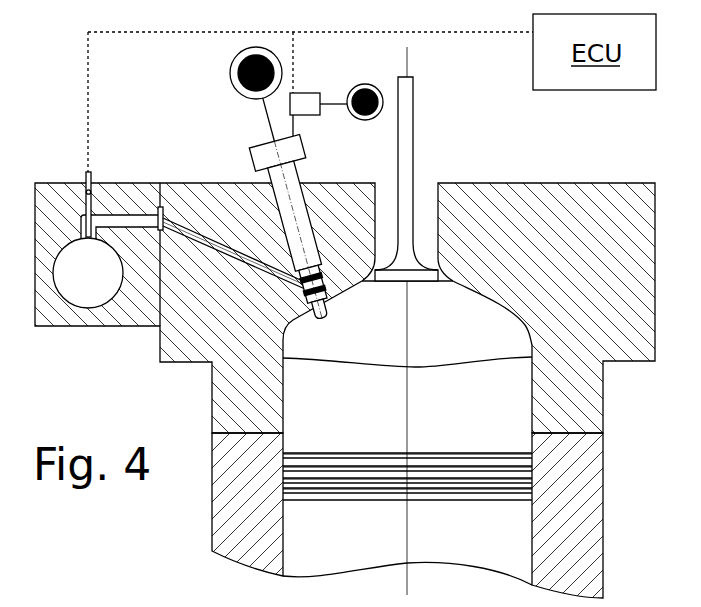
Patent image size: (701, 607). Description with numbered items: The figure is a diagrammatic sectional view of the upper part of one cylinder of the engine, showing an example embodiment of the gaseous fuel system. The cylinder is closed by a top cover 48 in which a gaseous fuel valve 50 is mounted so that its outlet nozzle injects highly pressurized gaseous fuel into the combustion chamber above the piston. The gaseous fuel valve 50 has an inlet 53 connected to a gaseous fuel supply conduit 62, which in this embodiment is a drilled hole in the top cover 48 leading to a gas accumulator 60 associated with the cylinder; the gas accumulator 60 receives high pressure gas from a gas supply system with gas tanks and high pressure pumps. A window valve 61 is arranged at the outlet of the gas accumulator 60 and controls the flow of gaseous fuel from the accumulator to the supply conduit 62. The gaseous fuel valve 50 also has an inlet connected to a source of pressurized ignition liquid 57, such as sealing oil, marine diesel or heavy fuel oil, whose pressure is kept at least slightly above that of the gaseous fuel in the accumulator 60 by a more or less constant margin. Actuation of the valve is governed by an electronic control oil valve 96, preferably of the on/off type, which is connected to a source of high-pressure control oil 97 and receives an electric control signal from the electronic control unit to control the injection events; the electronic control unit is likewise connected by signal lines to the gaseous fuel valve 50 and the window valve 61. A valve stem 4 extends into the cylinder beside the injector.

The intake valve 4 is at (414, 130).
The top cover 48 is at (552, 198).
The gaseous fuel valve 50 is at (294, 143).
The inlet 53 is at (310, 288).
The source of pressurized ignition liquid 57 is at (233, 71).
The gas accumulator 60 is at (77, 292).
The window valve 61 is at (81, 217).
The gaseous fuel supply conduit 62 is at (205, 238).
The electronic control oil valve 96 is at (303, 98).
The source of high-pressure control oil 97 is at (370, 86).